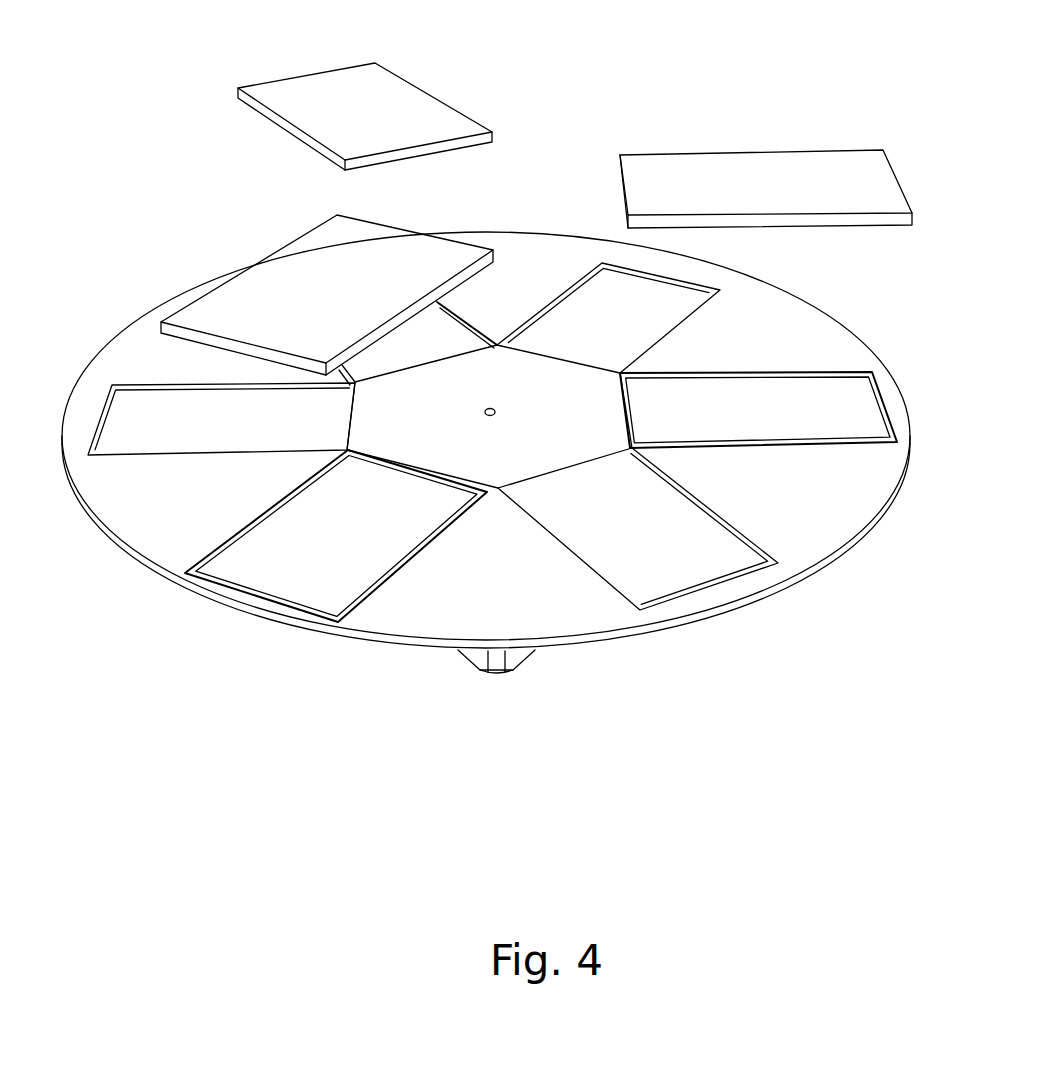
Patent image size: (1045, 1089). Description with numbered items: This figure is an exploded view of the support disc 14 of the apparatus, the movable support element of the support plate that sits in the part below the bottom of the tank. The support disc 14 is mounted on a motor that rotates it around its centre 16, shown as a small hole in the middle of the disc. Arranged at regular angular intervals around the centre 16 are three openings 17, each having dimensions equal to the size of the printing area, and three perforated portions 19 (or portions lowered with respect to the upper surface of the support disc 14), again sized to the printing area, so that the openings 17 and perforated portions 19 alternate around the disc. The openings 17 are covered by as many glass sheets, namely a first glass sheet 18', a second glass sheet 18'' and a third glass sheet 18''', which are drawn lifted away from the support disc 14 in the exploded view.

The support disc 14 is at (153, 508).
The centre 16 is at (494, 405).
The openings 17 is at (300, 578).
The first glass sheet 18' is at (766, 152).
The second glass sheet 18'' is at (327, 287).
The third glass sheet 18''' is at (365, 95).
The perforated portions 19 is at (163, 428).